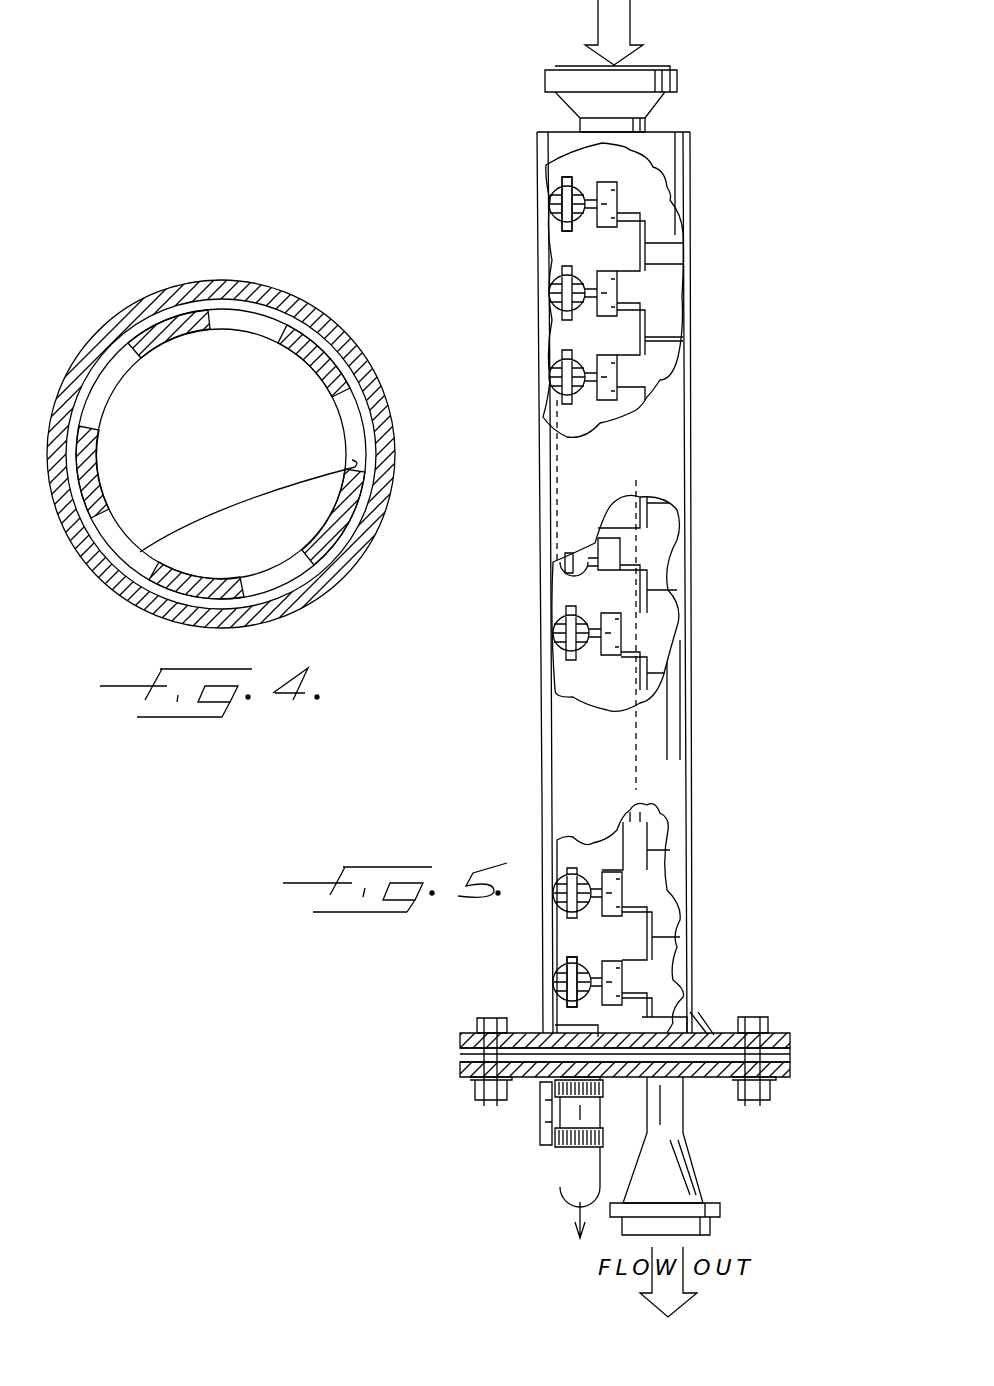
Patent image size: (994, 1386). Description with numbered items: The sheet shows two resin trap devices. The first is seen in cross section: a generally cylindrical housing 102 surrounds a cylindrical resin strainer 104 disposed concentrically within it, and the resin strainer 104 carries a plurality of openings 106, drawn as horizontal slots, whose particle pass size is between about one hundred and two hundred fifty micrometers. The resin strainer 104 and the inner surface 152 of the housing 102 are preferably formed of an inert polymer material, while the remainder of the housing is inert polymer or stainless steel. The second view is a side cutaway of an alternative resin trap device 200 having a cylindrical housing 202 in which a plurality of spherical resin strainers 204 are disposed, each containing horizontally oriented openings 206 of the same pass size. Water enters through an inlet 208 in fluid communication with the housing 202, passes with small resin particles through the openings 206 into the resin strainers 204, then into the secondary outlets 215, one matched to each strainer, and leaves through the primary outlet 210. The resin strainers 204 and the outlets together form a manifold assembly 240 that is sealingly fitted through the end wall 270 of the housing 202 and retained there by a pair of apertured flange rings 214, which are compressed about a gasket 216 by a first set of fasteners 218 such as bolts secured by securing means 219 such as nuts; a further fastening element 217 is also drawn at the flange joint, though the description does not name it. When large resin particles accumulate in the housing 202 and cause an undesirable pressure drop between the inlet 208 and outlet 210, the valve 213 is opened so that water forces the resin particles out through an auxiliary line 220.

In FIG. 4, the housing 102 is at (313, 308).
In FIG. 4, the resin strainer 104 is at (297, 365).
In FIG. 4, the openings 106 is at (240, 328).
In FIG. 4, the inner surface 152 is at (352, 525).
In FIG. 5, the resin trap device 200 is at (764, 228).
In FIG. 5, the housing 202 is at (625, 479).
In FIG. 5, the spherical resin strainers 204 is at (553, 293).
In FIG. 5, the openings 206 is at (553, 212).
In FIG. 5, the inlet 208 is at (663, 72).
In FIG. 5, the primary outlet 210 is at (657, 442).
In FIG. 5, the valve 213 is at (540, 1115).
In FIG. 5, the flange rings 214 is at (460, 1070).
In FIG. 5, the secondary outlets 215 is at (625, 367).
In FIG. 5, the gasket 216 is at (460, 1040).
In FIG. 5, the bolt 217 is at (488, 1018).
In FIG. 5, the fasteners 218 is at (478, 1083).
In FIG. 5, the securing means 219 is at (760, 1018).
In FIG. 5, the auxiliary line 220 is at (575, 1192).
In FIG. 5, the manifold assembly 240 is at (650, 635).
In FIG. 5, the end wall 270 is at (622, 1012).